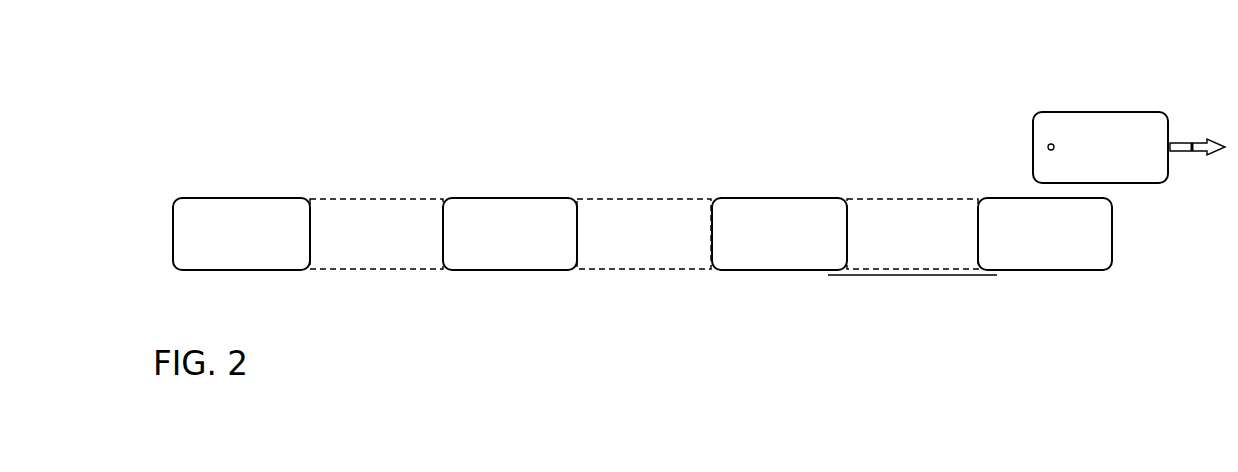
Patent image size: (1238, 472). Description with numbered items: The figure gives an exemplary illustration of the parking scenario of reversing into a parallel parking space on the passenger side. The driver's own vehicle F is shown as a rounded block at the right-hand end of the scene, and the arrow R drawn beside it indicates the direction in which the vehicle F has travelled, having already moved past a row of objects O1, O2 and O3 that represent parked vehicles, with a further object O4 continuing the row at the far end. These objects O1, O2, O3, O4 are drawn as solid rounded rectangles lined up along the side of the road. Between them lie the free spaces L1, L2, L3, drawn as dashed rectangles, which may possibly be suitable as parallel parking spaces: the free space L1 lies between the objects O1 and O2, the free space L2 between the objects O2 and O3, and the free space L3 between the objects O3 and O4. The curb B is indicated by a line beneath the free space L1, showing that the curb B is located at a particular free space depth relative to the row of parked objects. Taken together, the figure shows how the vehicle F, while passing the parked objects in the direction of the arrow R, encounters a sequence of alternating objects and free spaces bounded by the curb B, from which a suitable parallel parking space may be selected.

The driver's own vehicle F is at (1116, 112).
The arrow indicating direction of travel R is at (1193, 150).
The curb B is at (952, 275).
The object O1 is at (1045, 234).
The object O2 is at (779, 234).
The object O3 is at (510, 234).
The object O4 is at (241, 234).
The free space L1 is at (912, 234).
The free space L2 is at (644, 234).
The free space L3 is at (376, 234).